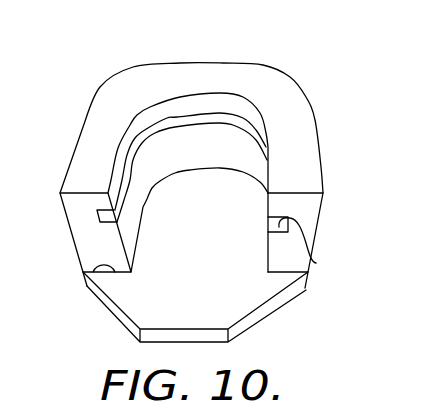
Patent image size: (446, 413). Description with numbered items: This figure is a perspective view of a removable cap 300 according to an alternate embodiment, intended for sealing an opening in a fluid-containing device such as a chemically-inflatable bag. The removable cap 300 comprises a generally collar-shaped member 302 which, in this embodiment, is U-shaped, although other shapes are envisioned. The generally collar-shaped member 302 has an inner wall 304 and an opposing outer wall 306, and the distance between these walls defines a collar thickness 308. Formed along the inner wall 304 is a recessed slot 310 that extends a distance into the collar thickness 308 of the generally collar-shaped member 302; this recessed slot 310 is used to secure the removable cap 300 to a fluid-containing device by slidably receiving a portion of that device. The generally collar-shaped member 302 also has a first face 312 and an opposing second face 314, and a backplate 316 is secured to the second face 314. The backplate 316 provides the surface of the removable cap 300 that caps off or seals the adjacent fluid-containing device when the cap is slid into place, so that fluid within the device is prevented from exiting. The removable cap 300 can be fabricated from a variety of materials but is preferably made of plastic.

The removable cap 300 is at (203, 180).
The generally collar-shaped member 302 is at (315, 117).
The inner wall 304 is at (268, 165).
The outer wall 306 is at (67, 217).
The collar thickness 308 is at (323, 165).
The recessed slot 310 is at (316, 263).
The first face 312 is at (218, 87).
The second face 314 is at (84, 275).
The backplate 316 is at (217, 276).